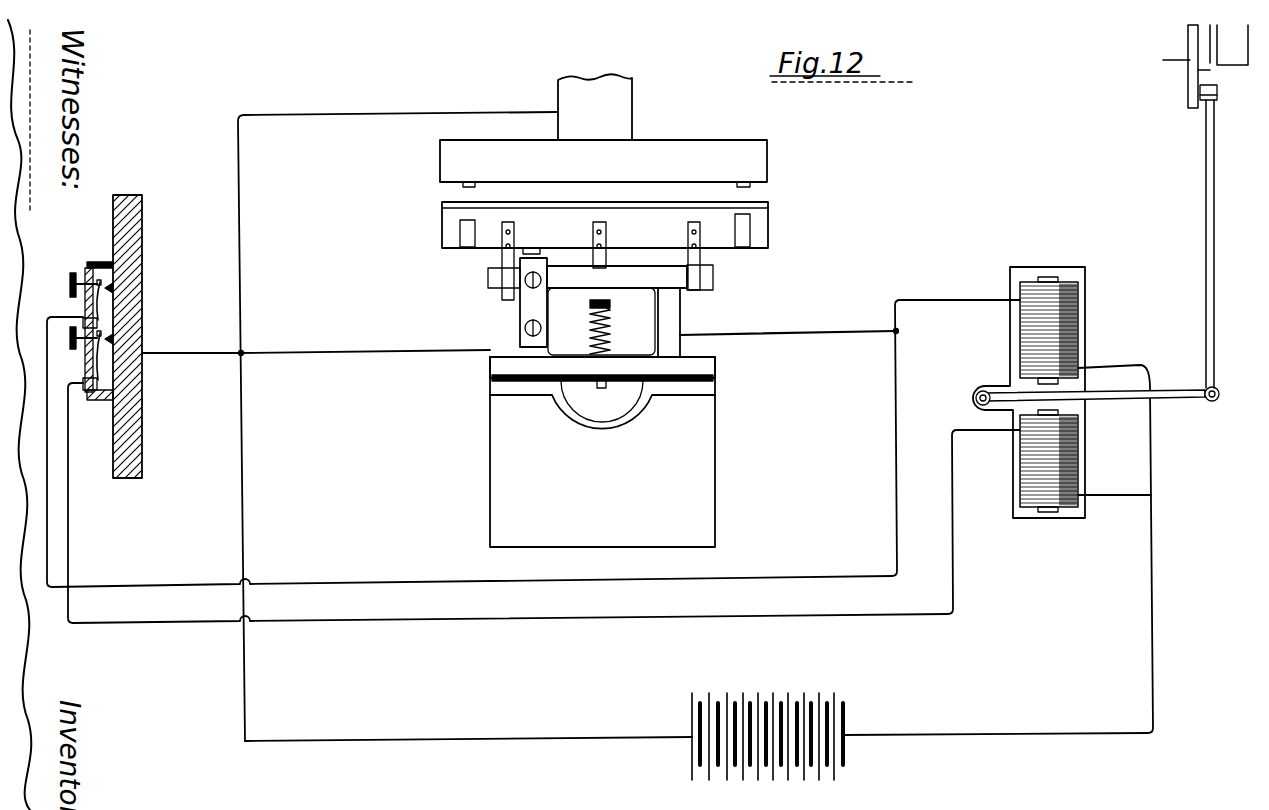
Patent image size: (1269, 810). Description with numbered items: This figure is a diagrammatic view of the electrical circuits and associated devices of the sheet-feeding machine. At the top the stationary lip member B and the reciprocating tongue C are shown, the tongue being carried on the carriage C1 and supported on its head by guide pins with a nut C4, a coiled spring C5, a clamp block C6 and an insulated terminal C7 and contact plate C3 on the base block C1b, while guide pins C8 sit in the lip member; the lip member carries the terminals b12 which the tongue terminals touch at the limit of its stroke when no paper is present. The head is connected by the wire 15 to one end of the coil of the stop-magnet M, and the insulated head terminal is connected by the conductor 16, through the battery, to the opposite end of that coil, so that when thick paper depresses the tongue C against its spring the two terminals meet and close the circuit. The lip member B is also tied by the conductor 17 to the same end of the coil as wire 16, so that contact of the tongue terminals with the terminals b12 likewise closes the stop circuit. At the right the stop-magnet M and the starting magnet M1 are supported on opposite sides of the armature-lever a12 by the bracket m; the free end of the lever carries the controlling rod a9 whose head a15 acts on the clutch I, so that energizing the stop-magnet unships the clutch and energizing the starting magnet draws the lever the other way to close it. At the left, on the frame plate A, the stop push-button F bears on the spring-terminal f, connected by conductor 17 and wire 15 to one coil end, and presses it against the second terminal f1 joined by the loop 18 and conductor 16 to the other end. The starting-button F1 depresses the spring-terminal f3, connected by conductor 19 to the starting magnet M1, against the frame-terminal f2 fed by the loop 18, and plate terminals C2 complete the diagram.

The conductor 17 is at (241, 218).
The conductor 19 is at (68, 520).
The conductor 16 is at (359, 352).
The loop conductor 18 is at (193, 345).
The wire 15 is at (825, 305).
The frame plate A is at (130, 454).
The push-button (stop-button) F is at (70, 283).
The starting-button F1 is at (70, 345).
The spring-terminal f is at (100, 300).
The second terminal f1 is at (112, 288).
The frame-terminal f2 is at (108, 338).
The spring-terminal f3 is at (100, 365).
The lip member B is at (603, 128).
The terminals b12 is at (463, 186).
The tongue C is at (768, 222).
The guide pins C8 is at (465, 248).
The carriage C1 is at (502, 262).
The bracket C7 is at (535, 256).
The clamp block with screws C6 is at (530, 310).
The cross plate C2 is at (617, 310).
The nut C4 is at (610, 305).
The spring C5 is at (612, 335).
The contact plate C3 is at (715, 375).
The base block C1b is at (602, 452).
The bracket m is at (1040, 267).
The stop-magnet M is at (1020, 343).
The starting magnet M1 is at (1020, 470).
The lever (armature-lever) a12 is at (1178, 398).
The controlling rod a9 is at (1214, 172).
The head of the controller a15 is at (1226, 93).
The clutch I is at (1190, 68).